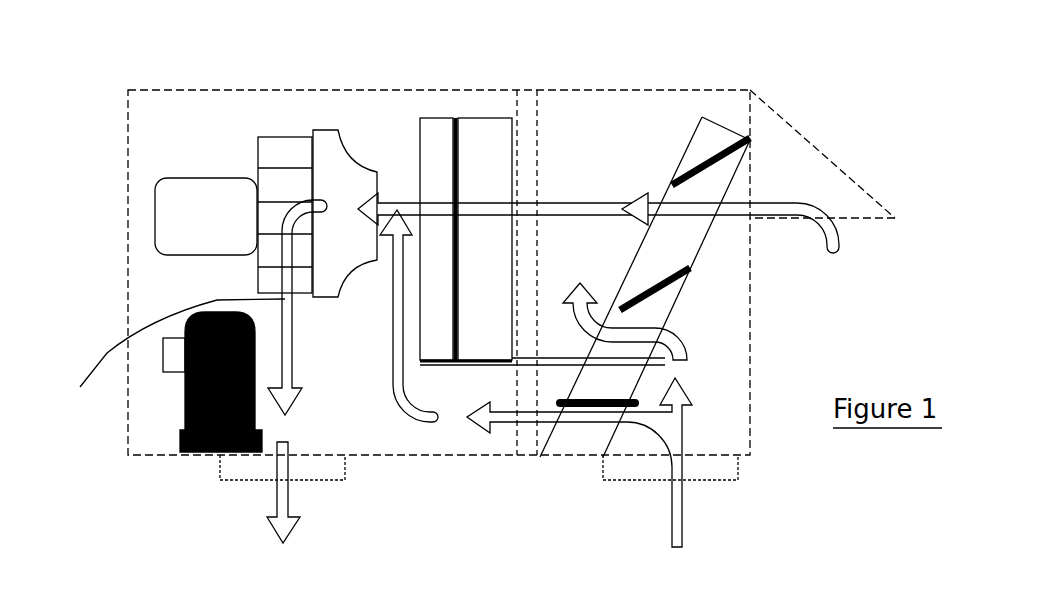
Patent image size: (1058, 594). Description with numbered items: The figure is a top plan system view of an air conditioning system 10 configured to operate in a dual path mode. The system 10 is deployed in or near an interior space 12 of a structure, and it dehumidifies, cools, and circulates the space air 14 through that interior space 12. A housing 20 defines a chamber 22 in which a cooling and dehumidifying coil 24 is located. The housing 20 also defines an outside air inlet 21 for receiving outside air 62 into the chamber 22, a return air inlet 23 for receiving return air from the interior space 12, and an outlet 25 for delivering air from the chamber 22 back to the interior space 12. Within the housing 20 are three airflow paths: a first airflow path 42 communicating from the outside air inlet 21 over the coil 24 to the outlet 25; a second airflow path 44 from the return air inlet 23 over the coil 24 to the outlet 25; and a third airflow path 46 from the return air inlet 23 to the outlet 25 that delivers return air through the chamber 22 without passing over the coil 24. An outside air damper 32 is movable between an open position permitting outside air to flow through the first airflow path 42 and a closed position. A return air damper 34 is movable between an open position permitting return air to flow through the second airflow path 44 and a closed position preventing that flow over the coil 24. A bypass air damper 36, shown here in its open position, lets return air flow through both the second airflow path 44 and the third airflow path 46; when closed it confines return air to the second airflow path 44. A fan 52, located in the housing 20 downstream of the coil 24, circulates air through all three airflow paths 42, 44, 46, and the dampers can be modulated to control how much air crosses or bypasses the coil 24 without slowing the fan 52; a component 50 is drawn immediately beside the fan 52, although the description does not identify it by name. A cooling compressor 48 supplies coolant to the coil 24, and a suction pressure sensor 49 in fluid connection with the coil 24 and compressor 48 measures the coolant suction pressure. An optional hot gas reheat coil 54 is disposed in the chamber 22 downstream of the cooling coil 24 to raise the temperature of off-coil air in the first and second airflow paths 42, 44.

The air conditioning system 10 is at (120, 113).
The interior space 12 is at (204, 527).
The space air 14 is at (685, 540).
The housing 20 is at (128, 198).
The outside air inlet 21 is at (837, 215).
The chamber 22 is at (165, 302).
The return air inlet 23 is at (678, 467).
The cooling and dehumidifying coil 24 is at (487, 117).
The outlet 25 is at (272, 485).
The outside air damper 32 is at (750, 138).
The return air damper 34 is at (690, 282).
The bypass air damper 36 is at (622, 408).
The first airflow path 42 is at (653, 195).
The second airflow path 44 is at (603, 290).
The third airflow path 46 is at (550, 421).
The cooling compressor 48 is at (177, 393).
The suction pressure sensor 49 is at (147, 360).
The condenser 50 is at (258, 135).
The fan 52 is at (300, 132).
The hot gas reheat coil 54 is at (437, 116).
The outside air 62 is at (838, 238).